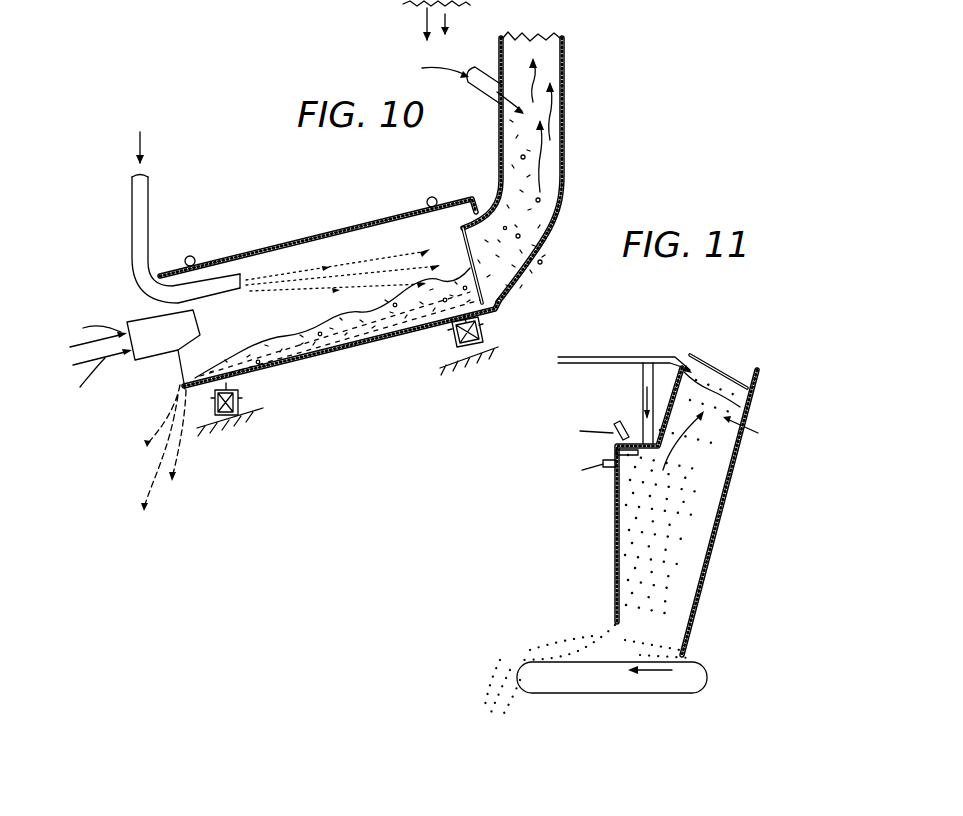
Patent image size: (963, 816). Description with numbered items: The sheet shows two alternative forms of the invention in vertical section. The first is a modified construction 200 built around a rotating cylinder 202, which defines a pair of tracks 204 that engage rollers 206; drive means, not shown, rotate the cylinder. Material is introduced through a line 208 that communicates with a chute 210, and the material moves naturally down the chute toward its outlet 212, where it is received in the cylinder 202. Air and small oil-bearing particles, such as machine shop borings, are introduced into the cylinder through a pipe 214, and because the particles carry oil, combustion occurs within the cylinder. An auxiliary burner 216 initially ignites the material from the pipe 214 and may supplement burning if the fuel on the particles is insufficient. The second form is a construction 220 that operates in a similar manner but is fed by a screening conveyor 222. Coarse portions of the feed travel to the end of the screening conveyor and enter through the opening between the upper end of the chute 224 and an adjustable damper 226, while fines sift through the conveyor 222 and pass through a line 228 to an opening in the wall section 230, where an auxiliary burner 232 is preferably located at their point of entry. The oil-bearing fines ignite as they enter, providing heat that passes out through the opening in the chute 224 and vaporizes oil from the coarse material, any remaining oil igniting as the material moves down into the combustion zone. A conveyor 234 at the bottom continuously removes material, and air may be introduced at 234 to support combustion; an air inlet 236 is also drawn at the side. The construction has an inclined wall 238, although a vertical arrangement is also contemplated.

In FIG. 10, the modified construction 200 is at (313, 175).
In FIG. 10, the rotating cylinder 202 is at (338, 352).
In FIG. 10, the tracks 204 is at (191, 257).
In FIG. 10, the rollers 206 is at (235, 418).
In FIG. 10, the line 208 is at (488, 88).
In FIG. 10, the chute 210 is at (550, 68).
In FIG. 10, the outlet of the chute 212 is at (473, 262).
In FIG. 10, the pipe 214 is at (140, 238).
In FIG. 10, the auxiliary burner 216 is at (152, 328).
In FIG. 11, the construction 220 is at (541, 530).
In FIG. 11, the screening conveyor 222 is at (602, 357).
In FIG. 11, the chute 224 is at (740, 393).
In FIG. 11, the adjustable damper 226 is at (707, 362).
In FIG. 11, the line 228 is at (642, 376).
In FIG. 11, the wall section 230 is at (616, 452).
In FIG. 11, the auxiliary burner 232 is at (617, 425).
In FIG. 11, the conveyor 234 is at (565, 667).
In FIG. 11, the air inlet 236 is at (606, 467).
In FIG. 11, the inclined wall 238 is at (713, 540).